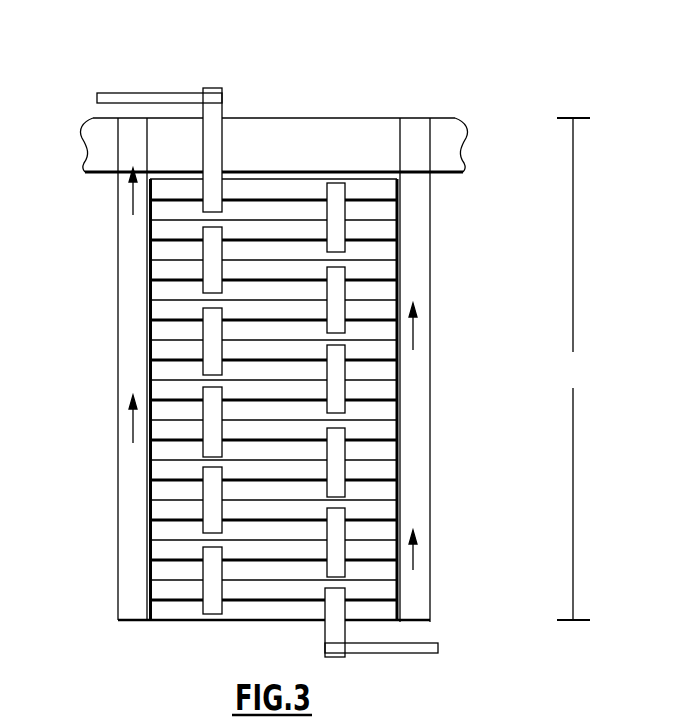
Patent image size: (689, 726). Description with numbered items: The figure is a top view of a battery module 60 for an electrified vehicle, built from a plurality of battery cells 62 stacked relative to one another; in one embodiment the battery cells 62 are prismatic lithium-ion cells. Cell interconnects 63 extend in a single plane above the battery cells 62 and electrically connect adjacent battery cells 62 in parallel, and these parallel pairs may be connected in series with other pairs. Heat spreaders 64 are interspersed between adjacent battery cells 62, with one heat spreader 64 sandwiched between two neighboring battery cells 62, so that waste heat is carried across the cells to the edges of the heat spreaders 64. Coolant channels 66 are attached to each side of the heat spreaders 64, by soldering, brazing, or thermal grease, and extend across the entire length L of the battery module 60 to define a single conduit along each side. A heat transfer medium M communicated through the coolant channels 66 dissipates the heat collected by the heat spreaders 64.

The battery module 60 is at (333, 76).
The battery cells 62 is at (385, 208).
The cell interconnects 63 is at (333, 305).
The heat spreaders 64 is at (238, 277).
The coolant channels 66 is at (128, 353).
The heat transfer medium M is at (133, 201).
The length L is at (573, 369).